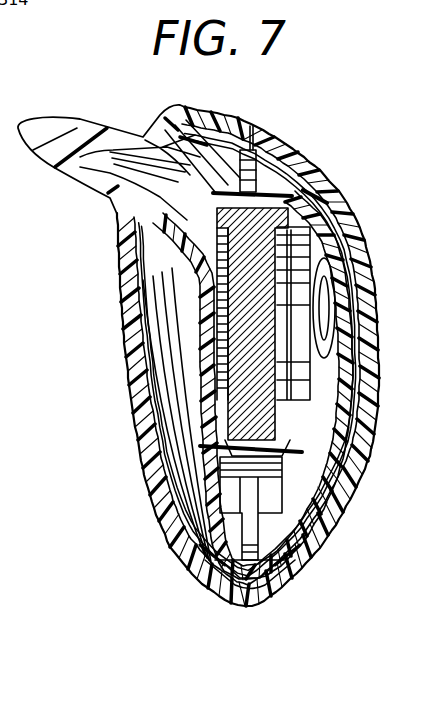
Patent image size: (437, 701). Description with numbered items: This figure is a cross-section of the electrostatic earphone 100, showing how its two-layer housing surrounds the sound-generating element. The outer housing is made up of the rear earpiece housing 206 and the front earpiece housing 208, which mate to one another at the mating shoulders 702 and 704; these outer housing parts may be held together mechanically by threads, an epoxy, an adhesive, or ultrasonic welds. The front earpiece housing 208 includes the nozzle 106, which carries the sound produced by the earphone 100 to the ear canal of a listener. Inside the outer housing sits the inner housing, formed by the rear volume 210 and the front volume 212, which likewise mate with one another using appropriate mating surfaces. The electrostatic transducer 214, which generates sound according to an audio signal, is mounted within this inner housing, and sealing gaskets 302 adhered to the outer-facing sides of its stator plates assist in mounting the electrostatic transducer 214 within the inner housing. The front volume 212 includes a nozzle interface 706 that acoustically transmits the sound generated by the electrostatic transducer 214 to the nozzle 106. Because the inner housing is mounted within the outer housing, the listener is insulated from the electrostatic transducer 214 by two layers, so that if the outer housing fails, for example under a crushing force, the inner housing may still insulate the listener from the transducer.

The electrostatic earphone 100 is at (346, 121).
The nozzle 106 is at (80, 125).
The rear earpiece housing 206 is at (368, 480).
The front earpiece housing 208 is at (147, 483).
The rear volume 210 is at (285, 186).
The front volume 212 is at (160, 345).
The electrostatic transducer 214 is at (268, 178).
The sealing gasket 302 is at (362, 228).
The mating shoulder 702 is at (262, 124).
The mating shoulder 704 is at (253, 614).
The nozzle interface 706 is at (205, 175).